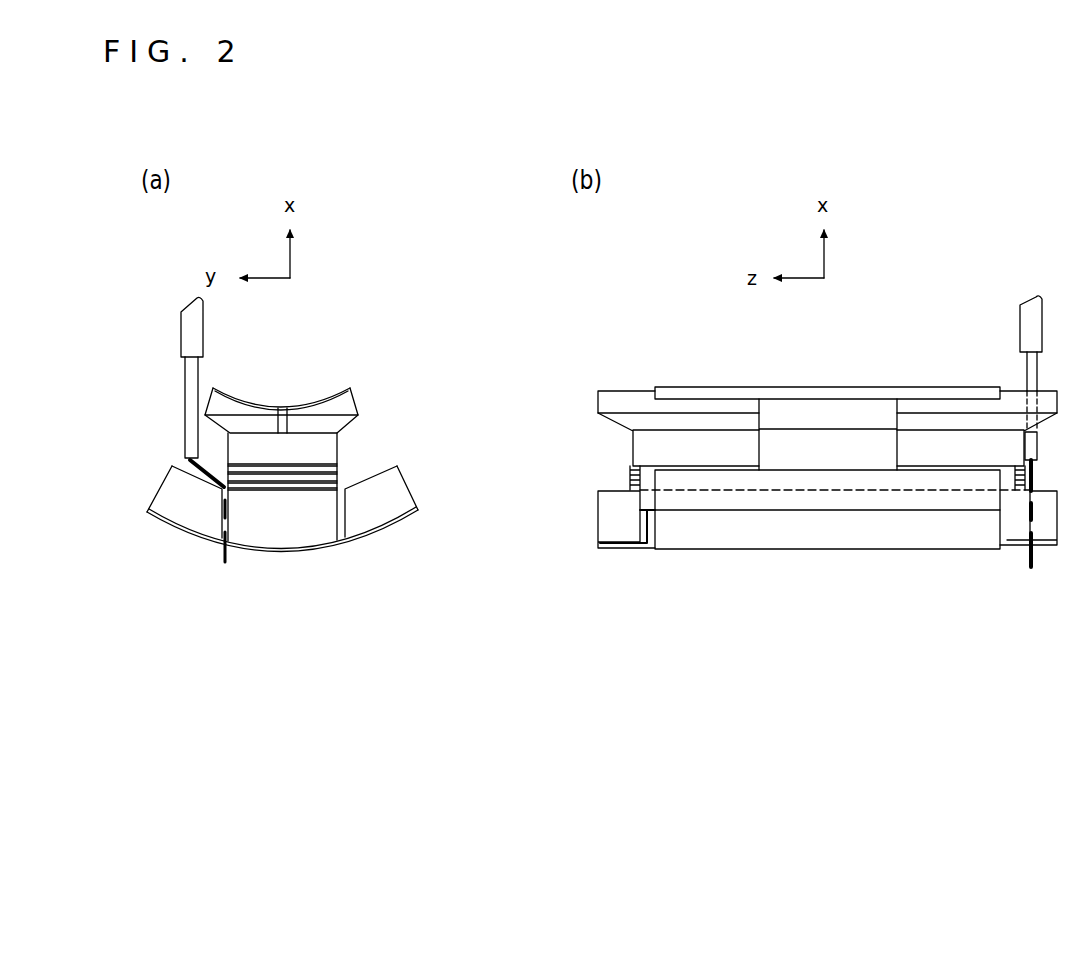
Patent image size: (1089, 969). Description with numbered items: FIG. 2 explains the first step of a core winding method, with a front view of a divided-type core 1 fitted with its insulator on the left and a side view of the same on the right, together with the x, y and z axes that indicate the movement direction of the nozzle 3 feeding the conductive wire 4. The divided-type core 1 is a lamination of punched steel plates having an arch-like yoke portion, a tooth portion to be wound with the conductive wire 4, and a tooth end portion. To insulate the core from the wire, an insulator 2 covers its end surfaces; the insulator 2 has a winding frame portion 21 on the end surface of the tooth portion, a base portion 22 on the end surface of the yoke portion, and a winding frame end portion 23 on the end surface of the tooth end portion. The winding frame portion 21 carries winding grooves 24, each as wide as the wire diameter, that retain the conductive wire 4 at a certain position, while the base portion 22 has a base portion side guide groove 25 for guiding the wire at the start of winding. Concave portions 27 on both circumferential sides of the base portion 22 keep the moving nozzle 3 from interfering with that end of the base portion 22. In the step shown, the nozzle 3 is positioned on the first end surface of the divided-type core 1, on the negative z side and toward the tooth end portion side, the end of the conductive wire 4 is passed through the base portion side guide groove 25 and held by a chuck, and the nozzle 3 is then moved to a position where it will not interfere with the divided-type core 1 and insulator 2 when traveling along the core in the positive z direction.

The divided-type core 1 is at (804, 557).
The insulator 2 is at (571, 550).
The nozzle 3 is at (192, 325).
The conductive wire 4 is at (216, 465).
The winding frame portion 21 is at (325, 453).
The base portion 22 is at (305, 520).
The winding frame end portion 23 is at (610, 403).
The winding grooves 24 is at (367, 490).
The base portion side guide groove 25 is at (230, 522).
The concave portions 27 is at (640, 512).